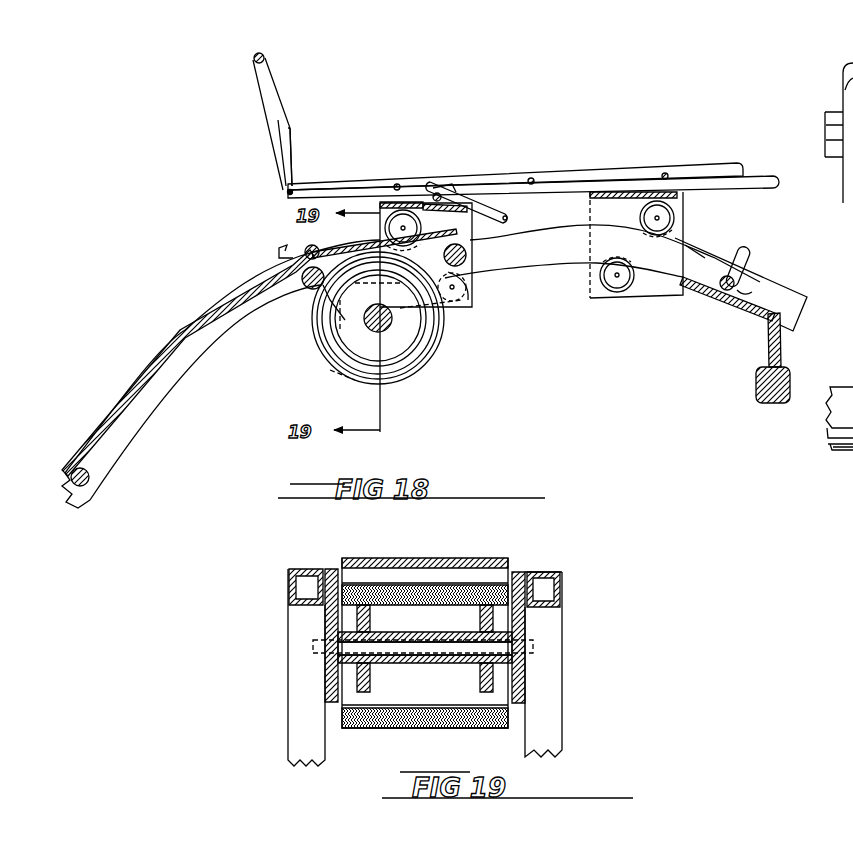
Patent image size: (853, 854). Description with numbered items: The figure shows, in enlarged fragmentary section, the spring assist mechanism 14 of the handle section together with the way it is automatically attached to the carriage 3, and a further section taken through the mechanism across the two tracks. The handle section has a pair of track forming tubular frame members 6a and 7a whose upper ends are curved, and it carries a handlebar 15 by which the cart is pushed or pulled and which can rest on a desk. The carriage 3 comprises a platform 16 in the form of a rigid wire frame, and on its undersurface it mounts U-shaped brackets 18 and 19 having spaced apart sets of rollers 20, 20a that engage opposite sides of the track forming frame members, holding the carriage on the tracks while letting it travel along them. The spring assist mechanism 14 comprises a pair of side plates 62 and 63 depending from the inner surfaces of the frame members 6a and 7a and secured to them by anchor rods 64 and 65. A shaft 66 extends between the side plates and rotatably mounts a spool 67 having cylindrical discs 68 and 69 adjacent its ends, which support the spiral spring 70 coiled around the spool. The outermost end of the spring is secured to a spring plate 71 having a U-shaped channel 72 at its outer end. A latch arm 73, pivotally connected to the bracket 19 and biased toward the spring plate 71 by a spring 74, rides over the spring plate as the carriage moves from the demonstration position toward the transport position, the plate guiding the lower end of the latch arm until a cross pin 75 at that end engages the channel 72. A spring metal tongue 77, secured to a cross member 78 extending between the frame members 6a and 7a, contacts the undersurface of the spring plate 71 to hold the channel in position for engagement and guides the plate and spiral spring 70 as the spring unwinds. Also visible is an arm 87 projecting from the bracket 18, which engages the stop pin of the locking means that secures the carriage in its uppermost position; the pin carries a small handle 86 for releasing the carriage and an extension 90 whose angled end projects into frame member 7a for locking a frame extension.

In FIG. 18, the carriage 3 is at (539, 128).
In FIG. 18, the spring assist mechanism 14 is at (402, 405).
In FIG. 18, the handlebar 15 is at (788, 377).
In FIG. 18, the platform 16 is at (555, 176).
In FIG. 18, the U-shaped bracket 18 is at (645, 298).
In FIG. 18, the U-shaped bracket 19 is at (470, 302).
In FIG. 18, the roller 20 is at (684, 213).
In FIG. 18, the roller 20a is at (617, 284).
In FIG. 18, the side plate 63 is at (318, 300).
In FIG. 19, the side plate 63 is at (528, 624).
In FIG. 18, the anchor rod 64 is at (467, 253).
In FIG. 18, the anchor rod 65 is at (307, 284).
In FIG. 18, the cylindrical disc 69 is at (400, 344).
In FIG. 19, the cylindrical disc 69 is at (493, 680).
In FIG. 18, the spiral spring 70 is at (334, 368).
In FIG. 18, the spring plate 71 is at (366, 250).
In FIG. 19, the spring plate 71 is at (405, 560).
In FIG. 18, the U-shaped channel 72 is at (280, 252).
In FIG. 18, the latch arm 73 is at (487, 183).
In FIG. 18, the spring 74 is at (437, 195).
In FIG. 18, the cross pin 75 is at (510, 213).
In FIG. 18, the spring metal tongue 77 is at (126, 401).
In FIG. 18, the cross member 78 is at (95, 479).
In FIG. 18, the track forming tubular frame member 7a is at (164, 377).
In FIG. 19, the track forming tubular frame member 7a is at (543, 572).
In FIG. 18, the handle 86 is at (752, 256).
In FIG. 18, the arm 87 is at (718, 254).
In FIG. 18, the extension 90 is at (736, 284).
In FIG. 19, the track forming tubular frame member 6a is at (312, 568).
In FIG. 19, the side plate 62 is at (325, 618).
In FIG. 19, the shaft 66 is at (393, 663).
In FIG. 19, the spool 67 is at (393, 640).
In FIG. 19, the cylindrical disc 68 is at (358, 680).